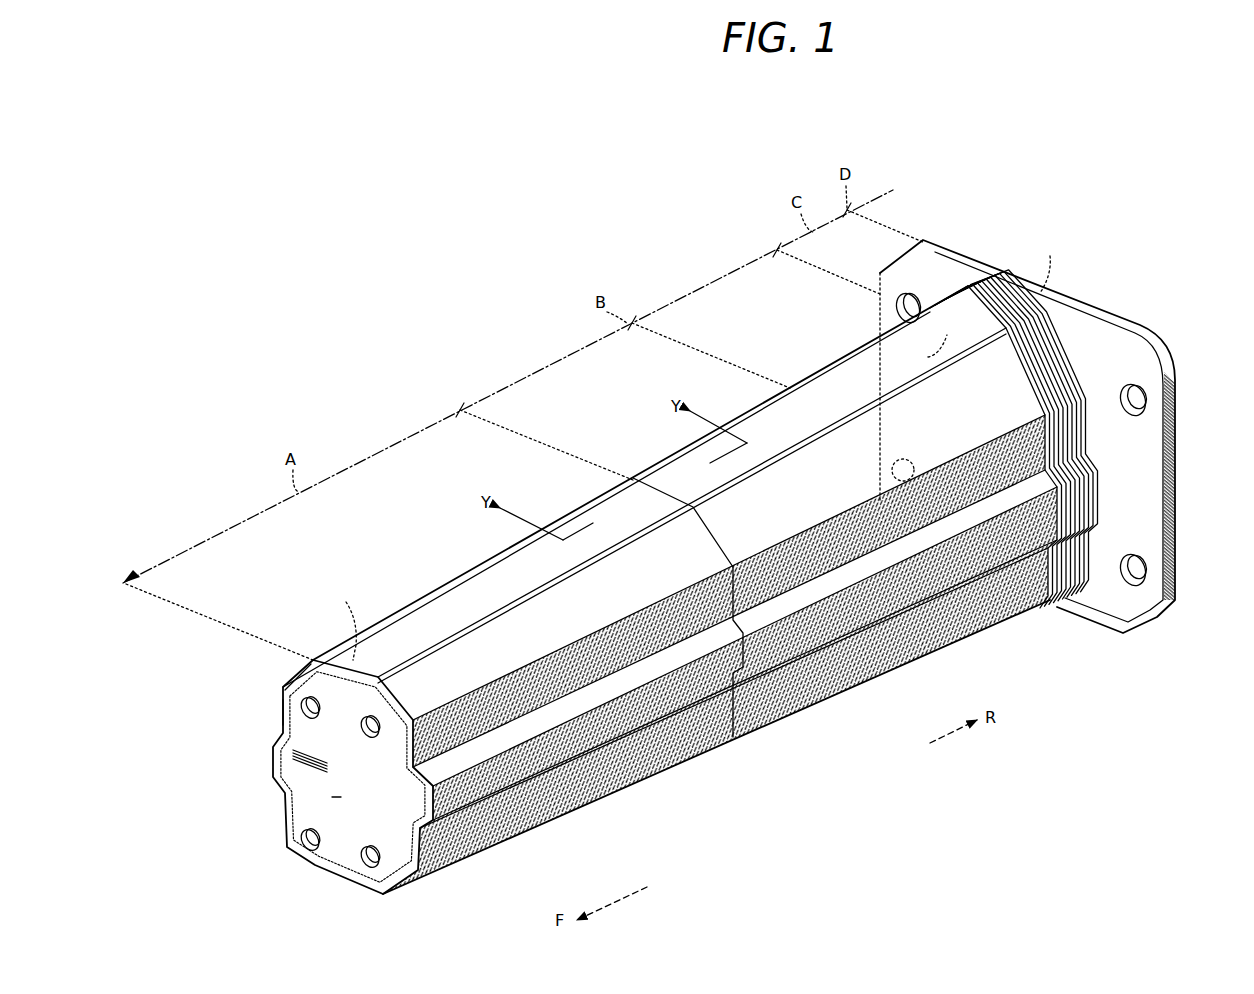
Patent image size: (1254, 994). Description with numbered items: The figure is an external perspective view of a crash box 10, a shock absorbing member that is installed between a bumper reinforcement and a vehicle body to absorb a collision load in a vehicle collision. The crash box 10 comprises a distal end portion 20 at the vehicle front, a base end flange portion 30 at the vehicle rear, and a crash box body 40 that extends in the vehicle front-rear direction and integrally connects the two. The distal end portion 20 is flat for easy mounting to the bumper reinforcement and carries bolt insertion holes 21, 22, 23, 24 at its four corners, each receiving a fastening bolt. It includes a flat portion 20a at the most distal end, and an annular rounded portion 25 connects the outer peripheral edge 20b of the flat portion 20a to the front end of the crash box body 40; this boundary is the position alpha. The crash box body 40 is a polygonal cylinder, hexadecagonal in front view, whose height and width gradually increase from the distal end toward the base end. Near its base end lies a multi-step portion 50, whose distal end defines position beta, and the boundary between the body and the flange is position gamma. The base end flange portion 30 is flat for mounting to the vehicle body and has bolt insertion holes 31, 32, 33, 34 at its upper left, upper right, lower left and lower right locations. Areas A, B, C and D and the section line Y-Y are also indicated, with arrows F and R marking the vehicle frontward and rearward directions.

The crash box 10 is at (707, 554).
The distal end portion 20 is at (315, 779).
The flat portion 20a is at (290, 817).
The outer peripheral edge 20b is at (300, 712).
The bolt insertion hole 21 is at (318, 722).
The bolt insertion hole 22 is at (368, 738).
The bolt insertion hole 23 is at (300, 843).
The bolt insertion hole 24 is at (360, 866).
The rounded portion 25 is at (300, 664).
The base end flange portion 30 is at (1017, 436).
The bolt insertion hole 31 is at (912, 296).
The bolt insertion hole 32 is at (1142, 394).
The bolt insertion hole 33 is at (892, 470).
The bolt insertion hole 34 is at (1146, 568).
The crash box body 40 is at (757, 733).
The multi-step portion 50 is at (987, 272).